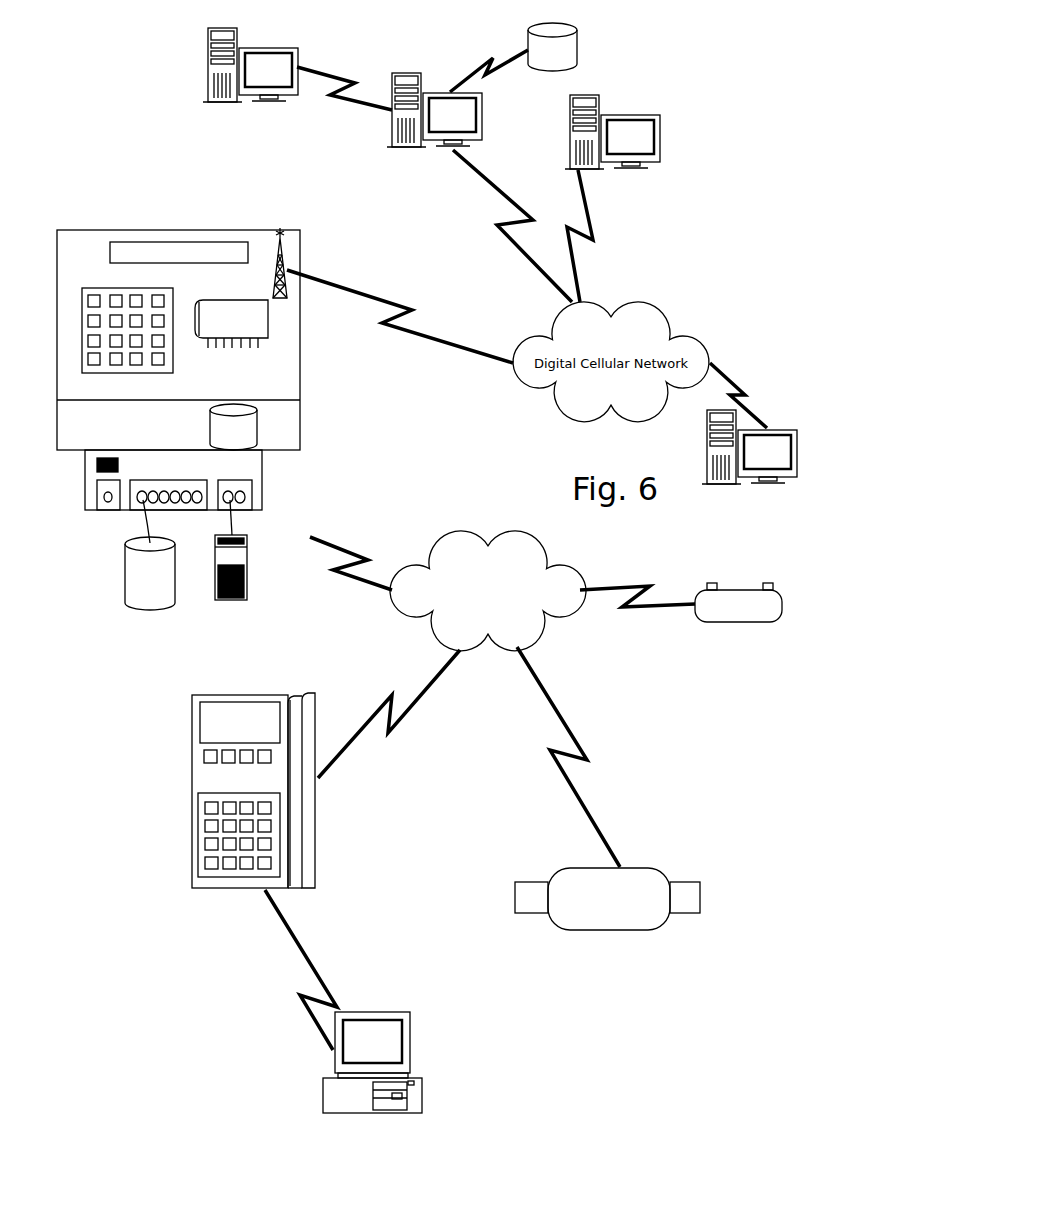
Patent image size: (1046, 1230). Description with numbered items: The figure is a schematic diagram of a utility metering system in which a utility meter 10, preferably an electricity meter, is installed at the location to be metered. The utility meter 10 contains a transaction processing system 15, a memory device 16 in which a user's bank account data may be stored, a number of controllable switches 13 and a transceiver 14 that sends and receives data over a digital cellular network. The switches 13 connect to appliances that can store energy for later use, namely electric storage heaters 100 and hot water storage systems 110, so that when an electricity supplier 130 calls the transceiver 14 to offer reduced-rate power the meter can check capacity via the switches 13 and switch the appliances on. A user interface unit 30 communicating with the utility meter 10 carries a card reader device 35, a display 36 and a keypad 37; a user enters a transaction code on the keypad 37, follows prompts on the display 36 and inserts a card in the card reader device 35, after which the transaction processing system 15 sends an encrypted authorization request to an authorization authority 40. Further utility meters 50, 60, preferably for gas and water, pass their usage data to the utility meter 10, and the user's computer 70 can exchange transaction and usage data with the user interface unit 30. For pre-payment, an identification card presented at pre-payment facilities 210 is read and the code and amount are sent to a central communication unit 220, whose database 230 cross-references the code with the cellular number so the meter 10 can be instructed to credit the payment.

The utility meter 10 is at (272, 378).
The controllable switches 13 is at (198, 463).
The transceiver 14 is at (280, 272).
The transaction processing system 15 is at (232, 325).
The memory device 16 is at (235, 428).
The user interface unit 30 is at (303, 827).
The card reader device 35 is at (290, 840).
The display 36 is at (253, 728).
The keypad 37 is at (230, 842).
The authorization authority 40 is at (763, 485).
The further utility meter 50 is at (735, 605).
The further utility meter 60 is at (647, 898).
The user's computer 70 is at (408, 1060).
The electric storage heaters 100 is at (243, 600).
The hot water storage systems 110 is at (150, 590).
The electricity supplier 130 is at (627, 133).
The pre-payment facilities 210 is at (268, 68).
The central communication unit 220 is at (450, 110).
The database 230 is at (553, 45).